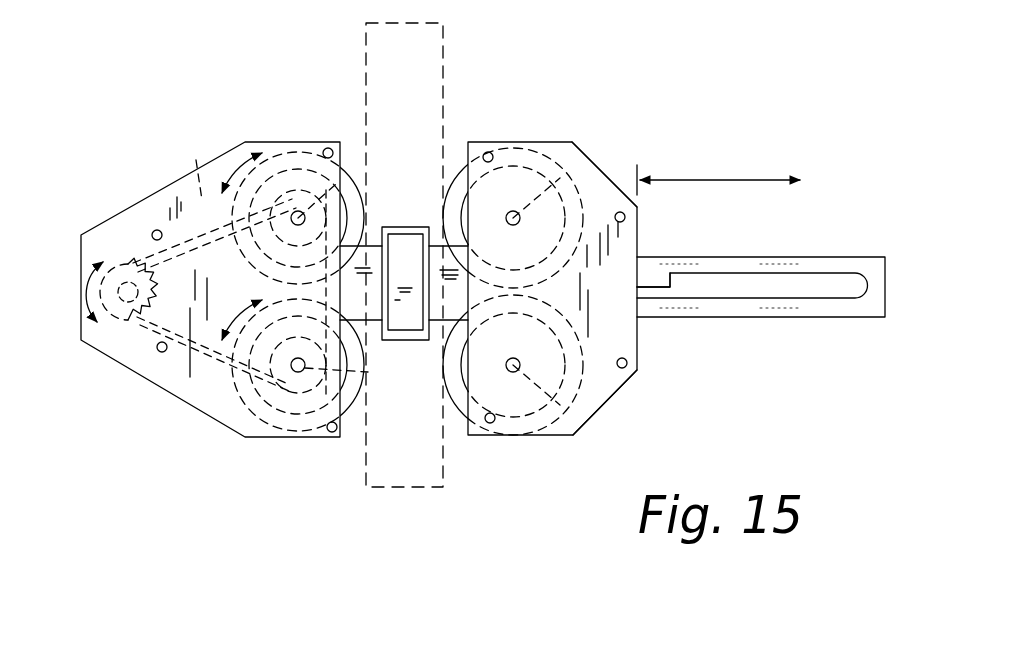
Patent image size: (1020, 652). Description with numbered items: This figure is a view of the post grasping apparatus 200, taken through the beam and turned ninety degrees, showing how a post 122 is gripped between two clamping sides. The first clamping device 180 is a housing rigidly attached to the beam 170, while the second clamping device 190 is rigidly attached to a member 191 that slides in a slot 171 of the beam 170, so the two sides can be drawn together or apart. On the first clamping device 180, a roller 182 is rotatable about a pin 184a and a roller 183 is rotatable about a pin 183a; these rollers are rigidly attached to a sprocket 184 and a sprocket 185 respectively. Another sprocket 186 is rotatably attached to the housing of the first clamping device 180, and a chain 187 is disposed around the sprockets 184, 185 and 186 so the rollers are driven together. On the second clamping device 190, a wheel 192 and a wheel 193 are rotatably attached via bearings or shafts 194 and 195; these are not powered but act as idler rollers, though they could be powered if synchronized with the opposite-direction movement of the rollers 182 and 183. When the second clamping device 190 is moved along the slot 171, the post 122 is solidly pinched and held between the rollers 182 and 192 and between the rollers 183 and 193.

The post 122 is at (445, 77).
The post grasping apparatus 200 is at (693, 89).
The first clamping device 180 is at (150, 195).
The chain 187 is at (185, 165).
The sprocket 184 is at (312, 160).
The pin 184a is at (362, 172).
The roller 183 is at (350, 412).
The pin 183a is at (377, 380).
The sprocket 186 is at (120, 310).
The sprocket 185 is at (327, 353).
The roller 182 is at (365, 209).
The second clamping device 190 is at (630, 249).
The bearing or shaft 194 is at (590, 162).
The bearing or shaft 195 is at (575, 398).
The wheel 192 is at (458, 168).
The wheel 193 is at (455, 412).
The beam 170 is at (785, 258).
The slot 171 is at (835, 286).
The member 191 is at (670, 288).